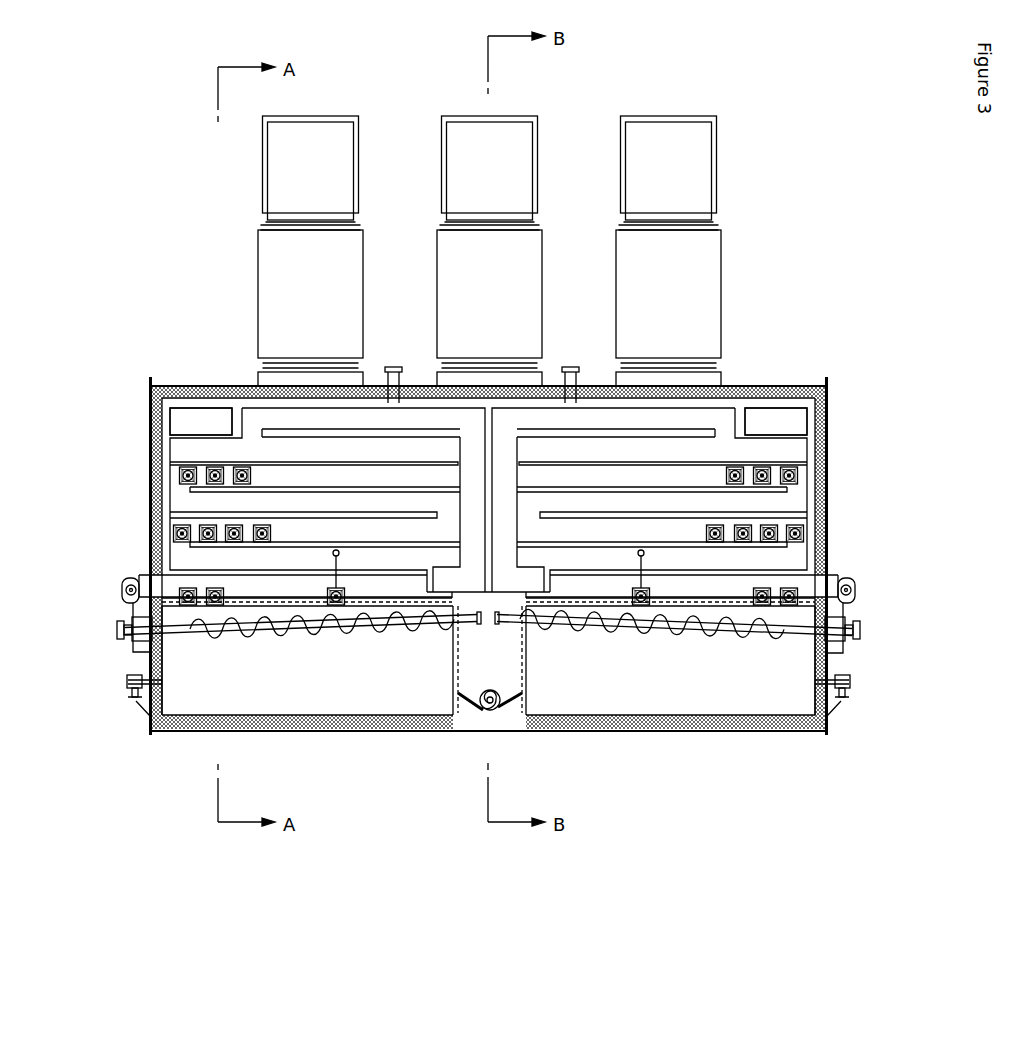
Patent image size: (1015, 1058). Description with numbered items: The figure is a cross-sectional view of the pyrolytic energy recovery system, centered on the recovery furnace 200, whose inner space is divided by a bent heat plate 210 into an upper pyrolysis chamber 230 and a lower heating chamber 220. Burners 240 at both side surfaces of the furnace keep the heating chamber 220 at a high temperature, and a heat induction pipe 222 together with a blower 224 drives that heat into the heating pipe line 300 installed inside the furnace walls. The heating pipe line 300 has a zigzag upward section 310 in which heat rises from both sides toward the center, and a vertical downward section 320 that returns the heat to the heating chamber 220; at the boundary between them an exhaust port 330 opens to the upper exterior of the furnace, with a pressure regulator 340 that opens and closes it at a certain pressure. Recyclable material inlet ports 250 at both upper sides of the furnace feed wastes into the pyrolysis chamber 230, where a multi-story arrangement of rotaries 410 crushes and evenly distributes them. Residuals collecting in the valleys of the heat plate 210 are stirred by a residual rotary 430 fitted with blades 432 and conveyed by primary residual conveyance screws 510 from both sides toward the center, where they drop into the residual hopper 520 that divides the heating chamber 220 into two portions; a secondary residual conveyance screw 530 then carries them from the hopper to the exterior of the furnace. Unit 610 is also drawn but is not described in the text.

The recovery furnace 200 is at (186, 378).
The heat plate 210 is at (128, 628).
The heating chamber 220 is at (373, 682).
The heat induction pipe 222 is at (845, 610).
The blower 224 is at (853, 587).
The pyrolysis chamber 230 is at (351, 524).
The burner 240 is at (852, 682).
The recyclable material inlet port 250 is at (183, 418).
The heating pipe line 300 is at (729, 402).
The zigzag upward section 310 is at (663, 475).
The downward section 320 is at (503, 450).
The exhaust port 330 is at (397, 367).
The pressure regulator 340 is at (388, 377).
The rotary 410 is at (187, 588).
The residual rotary 430 is at (650, 607).
The blade 432 is at (633, 578).
The primary residual conveyance screw 510 is at (290, 633).
The residual hopper 520 is at (469, 676).
The secondary residual conveyance screw 530 is at (493, 717).
The burner 610 is at (723, 281).